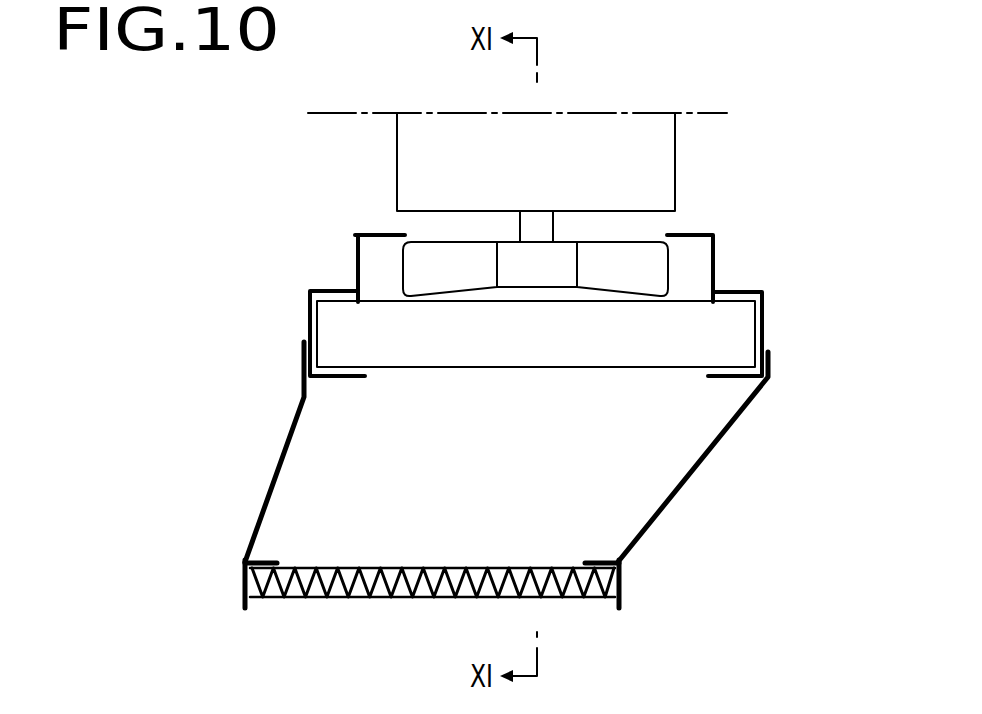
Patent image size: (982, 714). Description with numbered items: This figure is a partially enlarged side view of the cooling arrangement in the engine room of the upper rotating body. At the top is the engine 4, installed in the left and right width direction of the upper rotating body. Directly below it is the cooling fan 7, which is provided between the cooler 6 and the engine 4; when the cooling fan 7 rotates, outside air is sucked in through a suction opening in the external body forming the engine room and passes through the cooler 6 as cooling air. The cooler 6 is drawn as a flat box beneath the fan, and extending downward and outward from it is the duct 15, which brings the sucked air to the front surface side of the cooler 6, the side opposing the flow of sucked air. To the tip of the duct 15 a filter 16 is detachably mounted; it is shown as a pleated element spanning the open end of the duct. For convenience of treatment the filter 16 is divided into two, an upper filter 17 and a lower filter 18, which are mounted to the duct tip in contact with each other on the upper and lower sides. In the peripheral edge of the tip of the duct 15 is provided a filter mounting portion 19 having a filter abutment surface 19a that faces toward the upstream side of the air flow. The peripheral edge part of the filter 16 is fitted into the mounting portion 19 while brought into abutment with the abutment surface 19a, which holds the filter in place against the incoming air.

The engine 4 is at (675, 162).
The cooling fan 7 is at (403, 267).
The cooler 6 is at (757, 332).
The duct 15 is at (686, 480).
The filter mounting portion 19 is at (243, 587).
The filter abutment surface 19a is at (280, 568).
The filter 16 is at (432, 624).
The upper filter 17 is at (432, 582).
The lower filter 18 is at (330, 598).